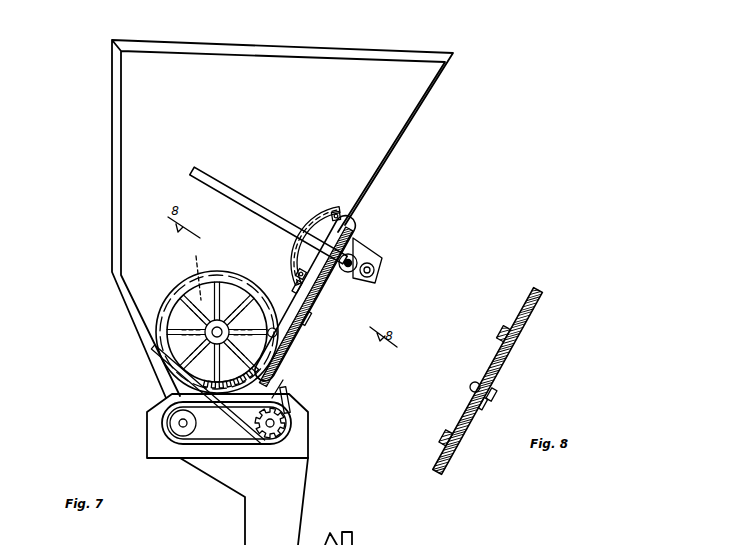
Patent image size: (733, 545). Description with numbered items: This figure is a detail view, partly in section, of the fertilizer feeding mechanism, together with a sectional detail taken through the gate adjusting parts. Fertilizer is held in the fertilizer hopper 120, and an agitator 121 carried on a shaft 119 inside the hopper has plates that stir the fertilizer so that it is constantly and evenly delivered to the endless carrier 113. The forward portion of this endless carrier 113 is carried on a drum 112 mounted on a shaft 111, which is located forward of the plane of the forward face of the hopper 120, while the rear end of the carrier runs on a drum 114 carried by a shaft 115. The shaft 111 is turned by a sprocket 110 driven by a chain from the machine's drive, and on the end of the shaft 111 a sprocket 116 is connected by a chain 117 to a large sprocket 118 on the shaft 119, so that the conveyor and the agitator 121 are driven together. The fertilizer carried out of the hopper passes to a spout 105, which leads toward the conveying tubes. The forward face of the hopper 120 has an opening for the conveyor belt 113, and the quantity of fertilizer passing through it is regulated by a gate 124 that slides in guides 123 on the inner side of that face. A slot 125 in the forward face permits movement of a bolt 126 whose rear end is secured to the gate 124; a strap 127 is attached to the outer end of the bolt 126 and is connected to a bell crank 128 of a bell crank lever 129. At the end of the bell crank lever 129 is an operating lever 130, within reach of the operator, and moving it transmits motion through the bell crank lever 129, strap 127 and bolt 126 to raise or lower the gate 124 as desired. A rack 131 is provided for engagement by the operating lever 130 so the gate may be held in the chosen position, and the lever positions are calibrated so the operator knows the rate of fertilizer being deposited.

In FIG. 7, the spout 105 is at (292, 485).
In FIG. 7, the sprocket 110 is at (293, 430).
In FIG. 7, the shaft 111 is at (277, 423).
In FIG. 7, the drum 112 is at (293, 412).
In FIG. 7, the endless carrier 113 is at (153, 460).
In FIG. 7, the drum 114 is at (172, 433).
In FIG. 7, the shaft 115 is at (177, 417).
In FIG. 7, the sprocket 116 is at (260, 447).
In FIG. 7, the chain 117 is at (307, 443).
In FIG. 7, the large sprocket 118 is at (243, 288).
In FIG. 7, the shaft 119 is at (220, 275).
In FIG. 7, the fertilizer hopper 120 is at (390, 117).
In FIG. 7, the agitator 121 is at (218, 249).
In FIG. 7, the guides 123 is at (293, 318).
In FIG. 8, the guides 123 is at (500, 332).
In FIG. 7, the gate 124 is at (280, 387).
In FIG. 8, the gate 124 is at (488, 363).
In FIG. 7, the slot 125 is at (313, 317).
In FIG. 8, the slot 125 is at (480, 405).
In FIG. 7, the bolt 126 is at (307, 342).
In FIG. 8, the bolt 126 is at (492, 380).
In FIG. 7, the strap 127 is at (320, 293).
In FIG. 8, the strap 127 is at (487, 400).
In FIG. 7, the bell crank 128 is at (367, 265).
In FIG. 7, the bell crank lever 129 is at (353, 262).
In FIG. 7, the operating lever 130 is at (270, 213).
In FIG. 7, the rack 131 is at (337, 210).